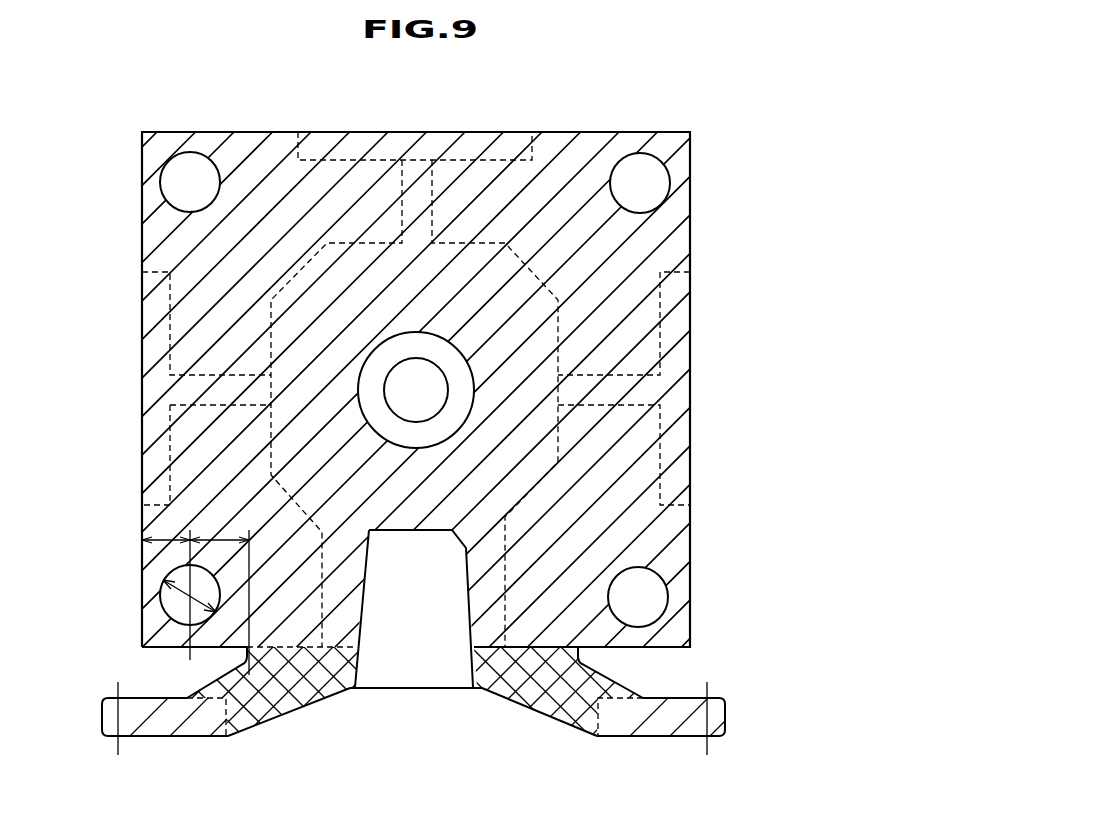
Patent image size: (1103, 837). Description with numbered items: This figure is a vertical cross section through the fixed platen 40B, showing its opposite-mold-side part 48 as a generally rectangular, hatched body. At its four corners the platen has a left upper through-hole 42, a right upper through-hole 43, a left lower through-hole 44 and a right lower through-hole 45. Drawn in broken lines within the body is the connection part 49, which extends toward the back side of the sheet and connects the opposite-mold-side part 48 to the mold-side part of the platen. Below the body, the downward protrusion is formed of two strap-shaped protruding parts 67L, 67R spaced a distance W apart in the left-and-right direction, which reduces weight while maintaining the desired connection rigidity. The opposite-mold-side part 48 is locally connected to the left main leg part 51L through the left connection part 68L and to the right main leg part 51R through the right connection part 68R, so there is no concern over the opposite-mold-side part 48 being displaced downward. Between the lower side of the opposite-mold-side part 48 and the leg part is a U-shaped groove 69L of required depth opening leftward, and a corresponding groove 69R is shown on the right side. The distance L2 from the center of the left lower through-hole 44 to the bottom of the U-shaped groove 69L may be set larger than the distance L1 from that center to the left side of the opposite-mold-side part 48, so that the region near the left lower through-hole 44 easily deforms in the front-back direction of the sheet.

The fixed platen 40B is at (703, 122).
The opposite-mold-side part 48 is at (283, 130).
The left upper through-hole 42 is at (190, 186).
The right upper through-hole 43 is at (640, 183).
The left lower through-hole 44 is at (175, 590).
The right lower through-hole 45 is at (637, 597).
The connection part 49 is at (272, 288).
The strap-shaped protruding part 67L is at (353, 608).
The strap-shaped protruding part 67R is at (472, 607).
The left connection part 68L is at (285, 707).
The right connection part 68R is at (532, 698).
The U-shaped groove 69L is at (222, 663).
The right neck portion 69R is at (595, 663).
The left main leg part 51L is at (107, 710).
The right main leg part 51R is at (713, 713).